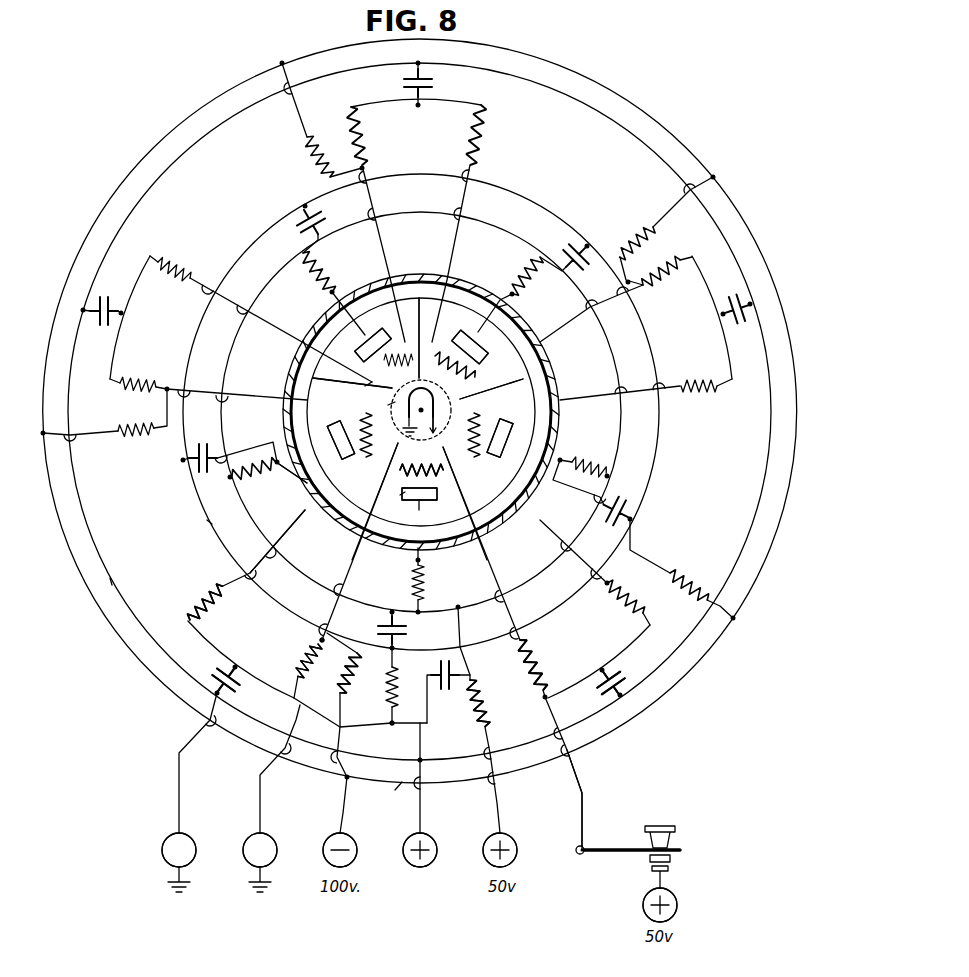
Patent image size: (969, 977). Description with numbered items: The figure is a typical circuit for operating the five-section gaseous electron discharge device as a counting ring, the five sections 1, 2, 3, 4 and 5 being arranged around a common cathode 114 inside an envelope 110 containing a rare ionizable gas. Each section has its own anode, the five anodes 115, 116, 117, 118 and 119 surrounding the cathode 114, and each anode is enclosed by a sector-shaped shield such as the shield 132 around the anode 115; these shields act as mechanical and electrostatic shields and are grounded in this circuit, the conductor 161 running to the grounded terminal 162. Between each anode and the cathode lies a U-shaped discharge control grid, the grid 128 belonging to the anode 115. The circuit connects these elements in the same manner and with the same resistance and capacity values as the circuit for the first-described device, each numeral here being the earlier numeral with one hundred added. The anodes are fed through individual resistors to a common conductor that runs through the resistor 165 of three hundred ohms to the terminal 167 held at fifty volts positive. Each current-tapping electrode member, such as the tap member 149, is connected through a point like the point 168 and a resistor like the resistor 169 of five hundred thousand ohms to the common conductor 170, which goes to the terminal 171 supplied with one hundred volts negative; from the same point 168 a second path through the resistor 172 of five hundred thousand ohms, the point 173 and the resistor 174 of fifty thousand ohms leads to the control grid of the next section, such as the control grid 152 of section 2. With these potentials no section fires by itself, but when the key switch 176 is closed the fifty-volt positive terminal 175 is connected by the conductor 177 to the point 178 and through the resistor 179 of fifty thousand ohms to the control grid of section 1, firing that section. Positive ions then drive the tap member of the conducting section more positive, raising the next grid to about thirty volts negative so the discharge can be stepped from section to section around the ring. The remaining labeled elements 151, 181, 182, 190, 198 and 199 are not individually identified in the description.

The section 1 is at (465, 503).
The section 2 is at (373, 501).
The section 3 is at (352, 375).
The section 4 is at (426, 338).
The section 5 is at (491, 389).
The envelope 110 is at (300, 487).
The cathode 114 is at (438, 405).
The anode 115 is at (428, 500).
The anode 116 is at (345, 430).
The anode 117 is at (362, 348).
The anode 118 is at (475, 335).
The anode 119 is at (515, 420).
The discharge control grid 128 is at (435, 462).
The shield 132 is at (432, 515).
The current-tapping electrode member 149 is at (400, 380).
The lead 151 is at (392, 502).
The control grid 152 is at (378, 408).
The conductor 161 is at (308, 537).
The grounded terminal 162 is at (185, 843).
The resistor 165 is at (467, 705).
The terminal 167 is at (508, 843).
The point 168 is at (320, 640).
The resistor 169 is at (345, 690).
The common conductor 170 is at (385, 792).
The terminal 171 is at (348, 843).
The resistor 172 is at (308, 660).
The point 173 is at (258, 648).
The resistor 174 is at (208, 598).
The positive electric potential supply terminal 175 is at (672, 900).
The key switch 176 is at (633, 845).
The conductor 177 is at (576, 775).
The point 178 is at (546, 695).
The resistor 179 is at (548, 648).
The ring conductor 181 is at (110, 578).
The ring conductor 182 is at (207, 520).
The terminal 190 is at (428, 843).
The terminal 198 is at (268, 843).
The junction 199 is at (393, 725).